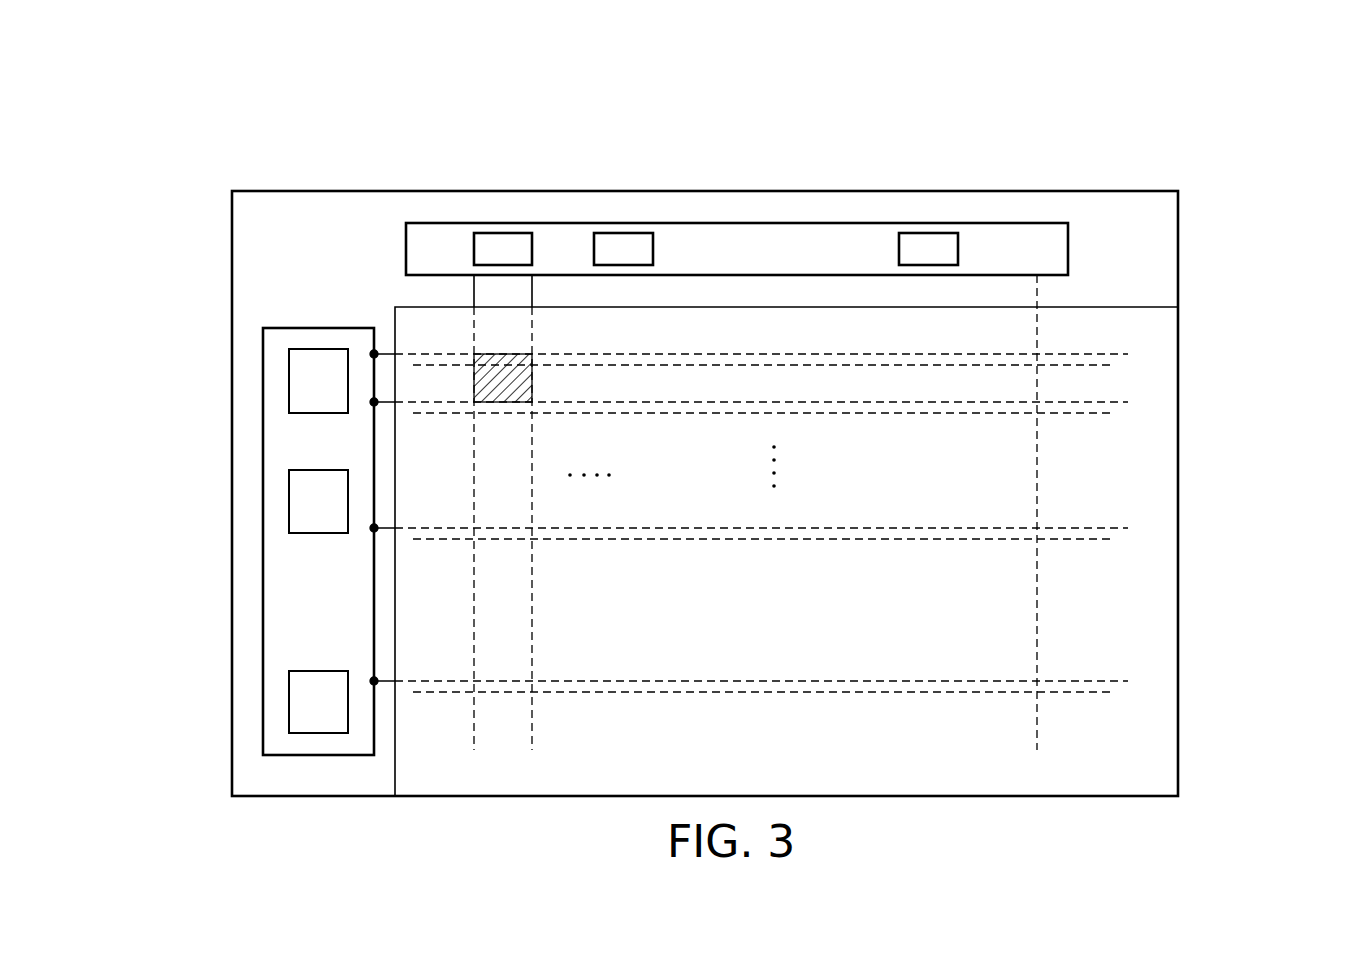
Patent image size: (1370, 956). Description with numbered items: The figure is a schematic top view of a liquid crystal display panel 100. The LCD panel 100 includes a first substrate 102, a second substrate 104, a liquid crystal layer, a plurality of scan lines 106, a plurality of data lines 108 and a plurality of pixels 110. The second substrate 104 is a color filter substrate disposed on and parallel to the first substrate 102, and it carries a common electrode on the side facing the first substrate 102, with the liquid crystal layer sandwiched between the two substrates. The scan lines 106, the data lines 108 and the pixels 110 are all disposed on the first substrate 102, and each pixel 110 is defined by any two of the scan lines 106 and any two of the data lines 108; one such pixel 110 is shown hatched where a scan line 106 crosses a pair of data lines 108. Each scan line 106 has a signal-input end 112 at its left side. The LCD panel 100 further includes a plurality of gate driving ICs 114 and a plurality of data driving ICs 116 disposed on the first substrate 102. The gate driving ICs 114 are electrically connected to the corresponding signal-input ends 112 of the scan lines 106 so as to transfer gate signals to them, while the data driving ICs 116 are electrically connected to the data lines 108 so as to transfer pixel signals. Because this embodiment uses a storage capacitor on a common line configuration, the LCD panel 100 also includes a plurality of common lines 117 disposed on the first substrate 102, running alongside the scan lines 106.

The LCD panel 100 is at (1223, 129).
The first substrate 102 is at (838, 191).
The second substrate 104 is at (1158, 627).
The scan lines 106 is at (1133, 355).
The data lines 108 is at (471, 718).
The pixels 110 is at (473, 363).
The signal-input end 112 is at (375, 349).
The gate driving ICs 114 is at (289, 497).
The data driving ICs 116 is at (510, 240).
The common lines 117 is at (1098, 365).